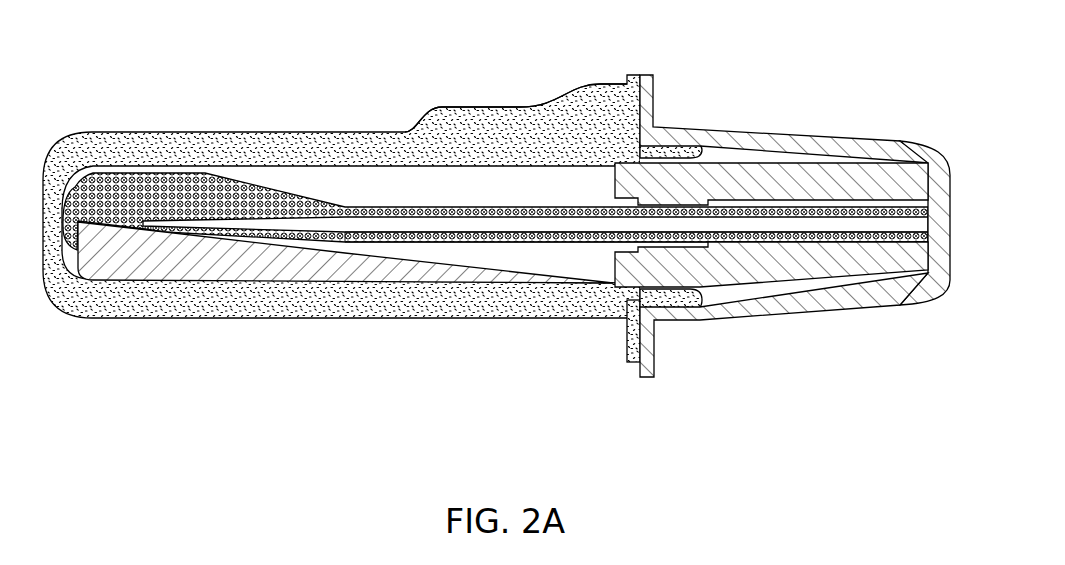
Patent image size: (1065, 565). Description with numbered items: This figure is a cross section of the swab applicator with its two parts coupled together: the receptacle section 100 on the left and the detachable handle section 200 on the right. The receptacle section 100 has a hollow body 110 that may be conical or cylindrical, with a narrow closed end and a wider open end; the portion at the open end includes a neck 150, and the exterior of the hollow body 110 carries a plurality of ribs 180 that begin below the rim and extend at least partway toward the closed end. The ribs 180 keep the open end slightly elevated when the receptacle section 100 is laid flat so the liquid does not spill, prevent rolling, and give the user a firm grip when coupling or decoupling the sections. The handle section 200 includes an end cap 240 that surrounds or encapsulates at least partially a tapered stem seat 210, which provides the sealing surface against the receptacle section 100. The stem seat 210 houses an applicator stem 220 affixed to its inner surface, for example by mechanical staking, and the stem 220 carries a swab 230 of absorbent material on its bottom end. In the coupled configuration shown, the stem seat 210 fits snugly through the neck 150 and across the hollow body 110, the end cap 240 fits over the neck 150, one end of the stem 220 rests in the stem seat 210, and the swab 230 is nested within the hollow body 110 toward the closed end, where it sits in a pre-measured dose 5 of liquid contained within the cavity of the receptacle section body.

The pre-measured dose 5 is at (265, 177).
The receptacle section 100 is at (506, 219).
The hollow body 110 is at (390, 153).
The neck 150 is at (648, 293).
The ribs 180 is at (490, 107).
The handle section 200 is at (787, 249).
The stem seat 210 is at (808, 260).
The applicator stem 220 is at (498, 233).
The swab 230 is at (128, 180).
The end cap 240 is at (918, 153).